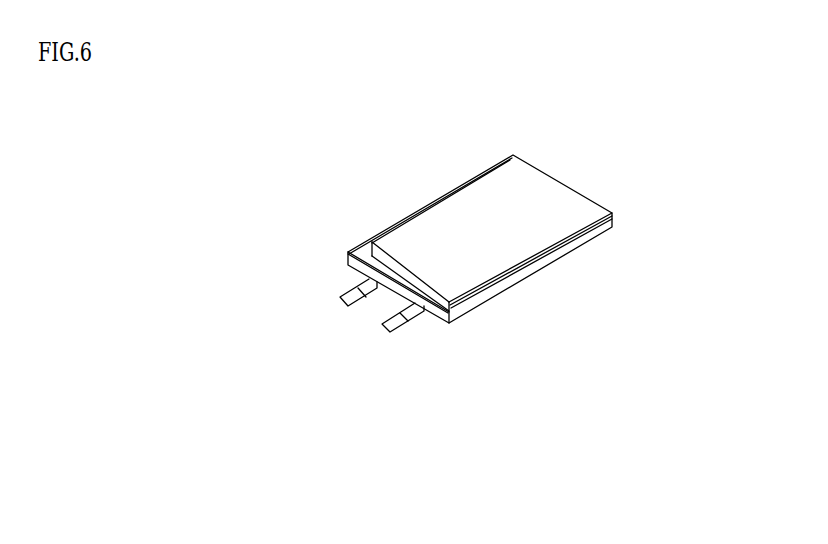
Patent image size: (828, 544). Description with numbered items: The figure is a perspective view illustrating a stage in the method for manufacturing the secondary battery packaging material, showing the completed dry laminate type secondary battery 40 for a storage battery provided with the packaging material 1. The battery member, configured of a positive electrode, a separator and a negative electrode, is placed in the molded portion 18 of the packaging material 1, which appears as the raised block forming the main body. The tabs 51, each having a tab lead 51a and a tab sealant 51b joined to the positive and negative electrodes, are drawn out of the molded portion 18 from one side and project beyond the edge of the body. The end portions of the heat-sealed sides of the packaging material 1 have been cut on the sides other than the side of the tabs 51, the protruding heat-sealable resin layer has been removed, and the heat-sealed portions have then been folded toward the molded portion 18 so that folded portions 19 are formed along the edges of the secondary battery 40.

The secondary battery 40 is at (336, 137).
The packaging material 1 is at (622, 219).
The molded portion 18 is at (458, 228).
The folded portions 19 is at (360, 249).
The tabs 51 is at (235, 241).
The tab lead 51a is at (346, 299).
The tab sealant 51b is at (353, 288).